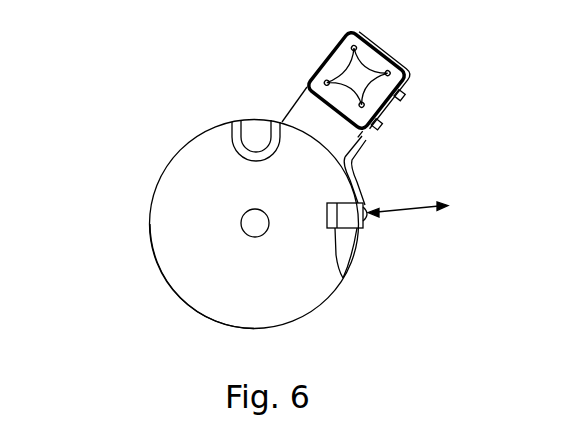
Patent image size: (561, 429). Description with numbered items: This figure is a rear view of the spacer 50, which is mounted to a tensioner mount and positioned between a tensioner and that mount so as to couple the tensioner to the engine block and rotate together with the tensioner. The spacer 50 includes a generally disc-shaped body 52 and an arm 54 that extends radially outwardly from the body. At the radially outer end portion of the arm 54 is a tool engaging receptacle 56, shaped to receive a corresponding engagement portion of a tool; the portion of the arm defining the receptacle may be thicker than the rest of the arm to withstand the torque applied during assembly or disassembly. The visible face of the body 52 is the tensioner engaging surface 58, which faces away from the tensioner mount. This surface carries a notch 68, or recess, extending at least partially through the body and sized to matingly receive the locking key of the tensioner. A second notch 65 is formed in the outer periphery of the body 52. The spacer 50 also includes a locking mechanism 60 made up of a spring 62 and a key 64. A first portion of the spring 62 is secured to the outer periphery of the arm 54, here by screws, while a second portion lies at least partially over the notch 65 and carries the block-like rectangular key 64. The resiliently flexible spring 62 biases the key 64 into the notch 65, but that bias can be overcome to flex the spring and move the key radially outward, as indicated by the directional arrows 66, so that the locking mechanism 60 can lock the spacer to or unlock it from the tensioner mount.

The spacer 50 is at (155, 192).
The body 52 is at (183, 298).
The arm 54 is at (358, 141).
The tool engaging receptacle 56 is at (363, 70).
The tensioner engaging surface 58 is at (157, 222).
The locking mechanism 60 is at (367, 195).
The spring 62 is at (357, 172).
The key 64 is at (367, 228).
The notch 65 is at (340, 280).
The directional arrows 66 is at (395, 213).
The notch 68 is at (255, 128).